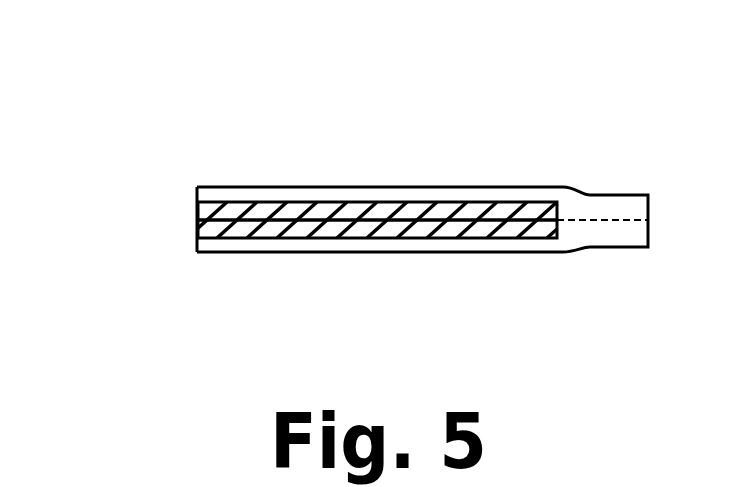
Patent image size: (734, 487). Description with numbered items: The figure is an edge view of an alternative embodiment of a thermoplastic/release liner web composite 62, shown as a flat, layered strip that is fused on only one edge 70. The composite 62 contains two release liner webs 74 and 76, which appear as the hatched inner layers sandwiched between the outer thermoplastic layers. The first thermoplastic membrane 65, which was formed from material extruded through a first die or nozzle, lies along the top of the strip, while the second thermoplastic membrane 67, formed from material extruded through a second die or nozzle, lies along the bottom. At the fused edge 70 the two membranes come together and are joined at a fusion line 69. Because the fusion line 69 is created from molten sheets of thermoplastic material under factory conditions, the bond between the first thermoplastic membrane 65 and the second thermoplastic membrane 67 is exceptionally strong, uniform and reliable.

The thermoplastic/release liner web composite 62 is at (379, 130).
The first thermoplastic membrane 65 is at (240, 187).
The second thermoplastic membrane 67 is at (250, 252).
The fusion line 69 is at (570, 217).
The edge 70 is at (608, 285).
The release liner web 74 is at (197, 229).
The release liner web 76 is at (197, 211).